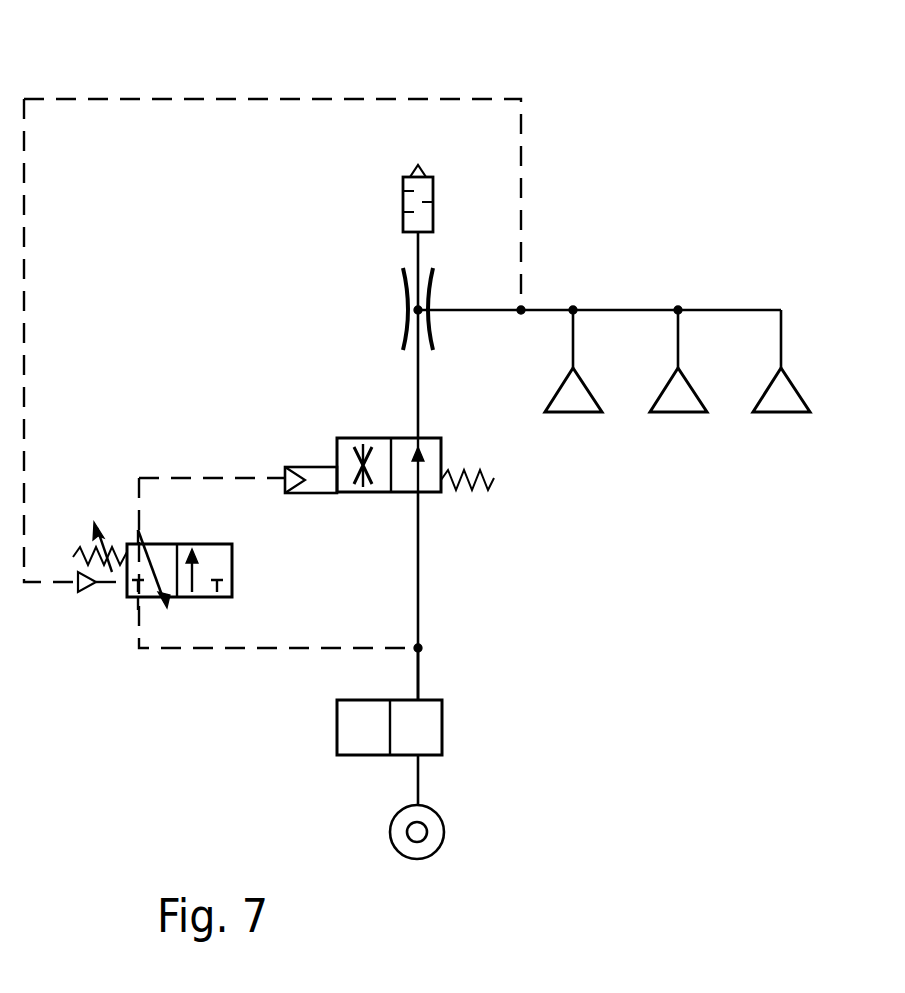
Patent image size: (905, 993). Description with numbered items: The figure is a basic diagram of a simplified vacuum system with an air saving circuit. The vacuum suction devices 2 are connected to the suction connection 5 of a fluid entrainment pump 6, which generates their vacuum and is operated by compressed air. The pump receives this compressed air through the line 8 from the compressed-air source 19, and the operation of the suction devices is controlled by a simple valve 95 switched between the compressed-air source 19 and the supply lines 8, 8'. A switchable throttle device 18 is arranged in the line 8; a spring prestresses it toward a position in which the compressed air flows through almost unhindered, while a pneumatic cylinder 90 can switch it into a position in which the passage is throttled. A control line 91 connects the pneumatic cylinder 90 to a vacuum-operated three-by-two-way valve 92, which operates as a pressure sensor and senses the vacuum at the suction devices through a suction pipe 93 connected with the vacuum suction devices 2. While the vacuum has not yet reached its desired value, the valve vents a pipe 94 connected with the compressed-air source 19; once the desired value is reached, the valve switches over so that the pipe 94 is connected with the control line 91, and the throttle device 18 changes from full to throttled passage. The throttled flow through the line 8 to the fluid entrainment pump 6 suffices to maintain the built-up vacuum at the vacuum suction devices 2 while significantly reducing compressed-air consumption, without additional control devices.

The vacuum suction devices 2 is at (678, 420).
The suction connection 5 is at (428, 310).
The fluid entrainment pump 6 is at (445, 268).
The line 8 is at (451, 466).
The supply line 8' is at (468, 674).
The switchable throttle device 18 is at (452, 505).
The compressed-air source 19 is at (440, 833).
The pneumatic cylinder 90 is at (286, 464).
The control line 91 is at (172, 478).
The vacuum-operated 3/2-way valve 92 is at (238, 572).
The suction pipe 93 is at (452, 99).
The pipe 94 is at (245, 651).
The valve 95 is at (448, 728).